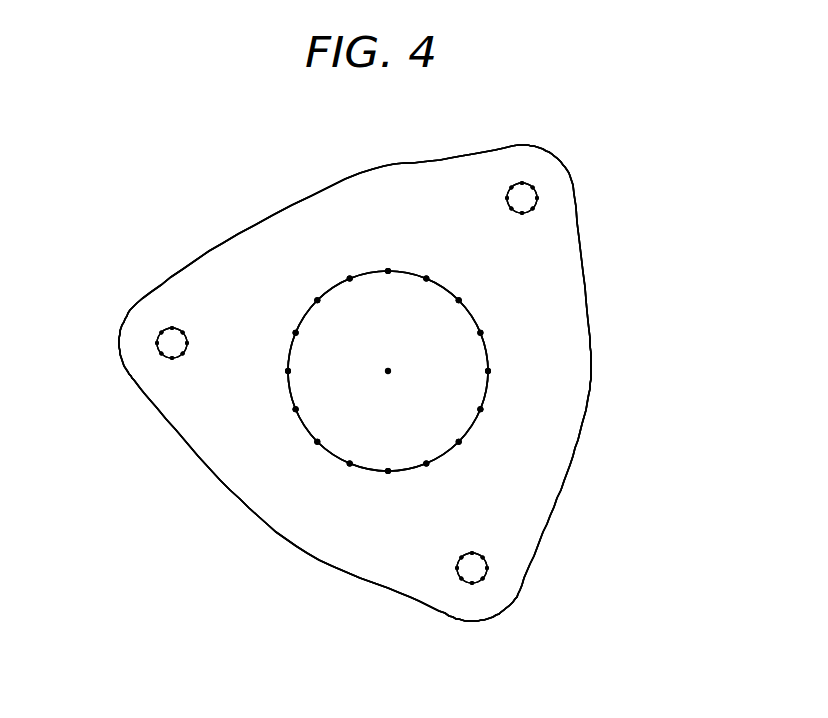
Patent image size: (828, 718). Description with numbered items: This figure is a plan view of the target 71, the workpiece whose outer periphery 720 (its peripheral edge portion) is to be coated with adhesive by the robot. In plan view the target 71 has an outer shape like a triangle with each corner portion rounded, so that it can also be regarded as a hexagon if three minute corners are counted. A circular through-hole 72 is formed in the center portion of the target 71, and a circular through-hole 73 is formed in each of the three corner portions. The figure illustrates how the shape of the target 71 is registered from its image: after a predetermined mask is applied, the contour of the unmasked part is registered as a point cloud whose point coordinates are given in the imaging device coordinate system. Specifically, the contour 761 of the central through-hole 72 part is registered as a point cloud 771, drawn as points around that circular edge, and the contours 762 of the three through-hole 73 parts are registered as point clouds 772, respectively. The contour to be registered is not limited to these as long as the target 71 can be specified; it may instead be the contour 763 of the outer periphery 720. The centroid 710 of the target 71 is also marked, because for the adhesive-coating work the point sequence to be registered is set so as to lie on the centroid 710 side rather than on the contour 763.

The target 71 is at (632, 218).
The through-hole 72 is at (488, 388).
The through-holes 73 is at (515, 184).
The centroid 710 is at (388, 371).
The outer periphery 720 is at (225, 252).
The contour 761 is at (482, 335).
The contours 762 is at (538, 194).
The contour 763 is at (583, 282).
The point cloud 771 is at (467, 442).
The point clouds 772 is at (538, 183).